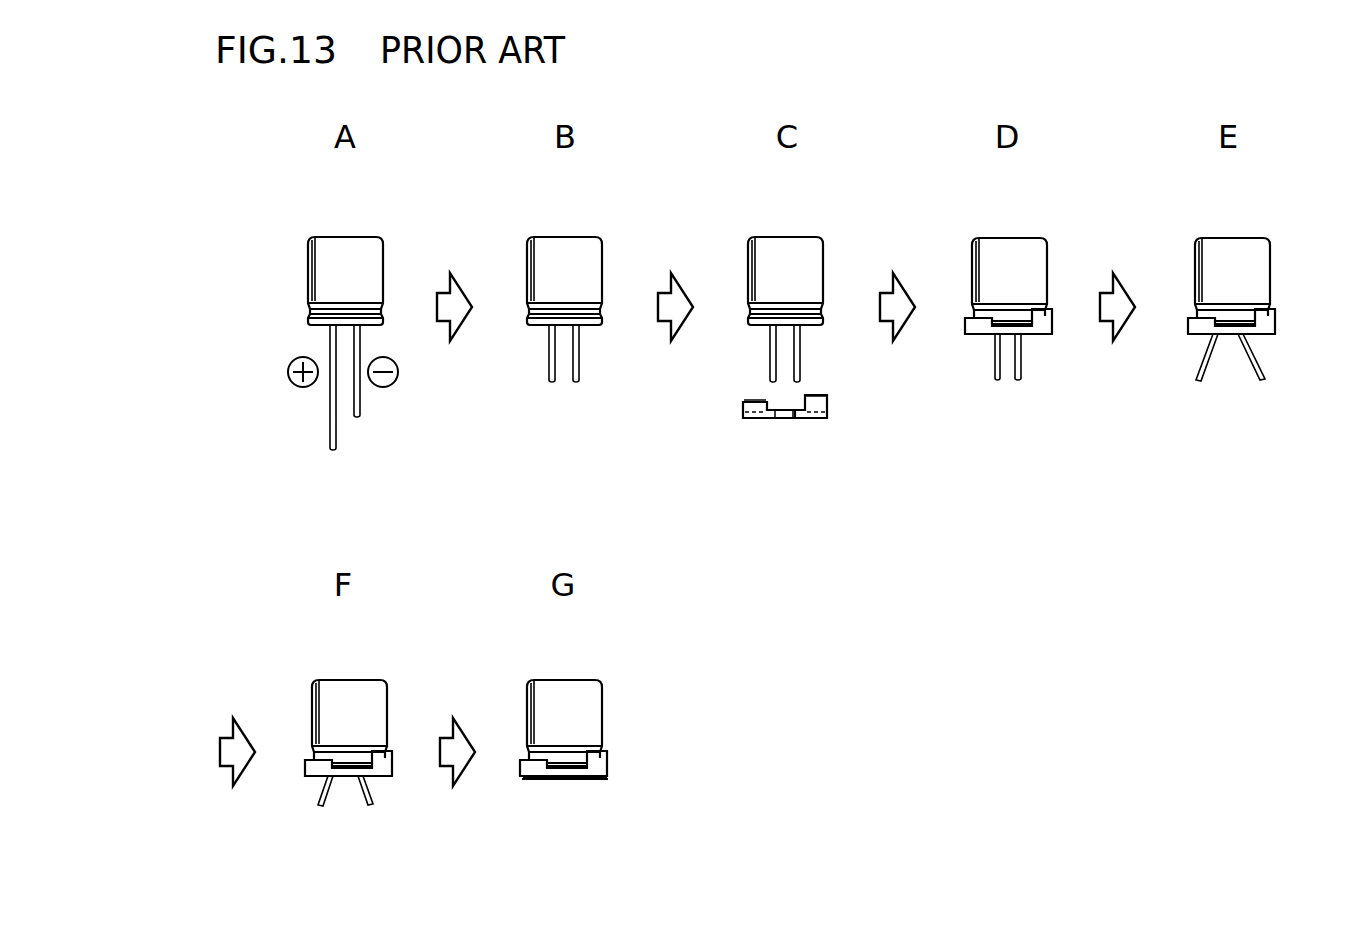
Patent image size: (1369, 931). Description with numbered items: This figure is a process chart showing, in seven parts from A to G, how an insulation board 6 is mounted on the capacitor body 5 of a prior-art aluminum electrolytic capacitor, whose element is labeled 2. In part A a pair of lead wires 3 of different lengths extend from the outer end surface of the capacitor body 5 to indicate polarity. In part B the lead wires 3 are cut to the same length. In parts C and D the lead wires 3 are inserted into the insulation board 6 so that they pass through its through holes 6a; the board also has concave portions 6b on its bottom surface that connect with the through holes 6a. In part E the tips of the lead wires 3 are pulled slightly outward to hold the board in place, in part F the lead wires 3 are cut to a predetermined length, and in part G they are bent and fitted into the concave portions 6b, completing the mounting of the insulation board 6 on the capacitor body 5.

The capacitor element body 2 is at (797, 470).
The lead wires 3 is at (790, 591).
The capacitor body 5 is at (741, 462).
The insulation board 6 is at (818, 569).
The through holes 6a is at (830, 445).
The concave portions 6b is at (823, 437).